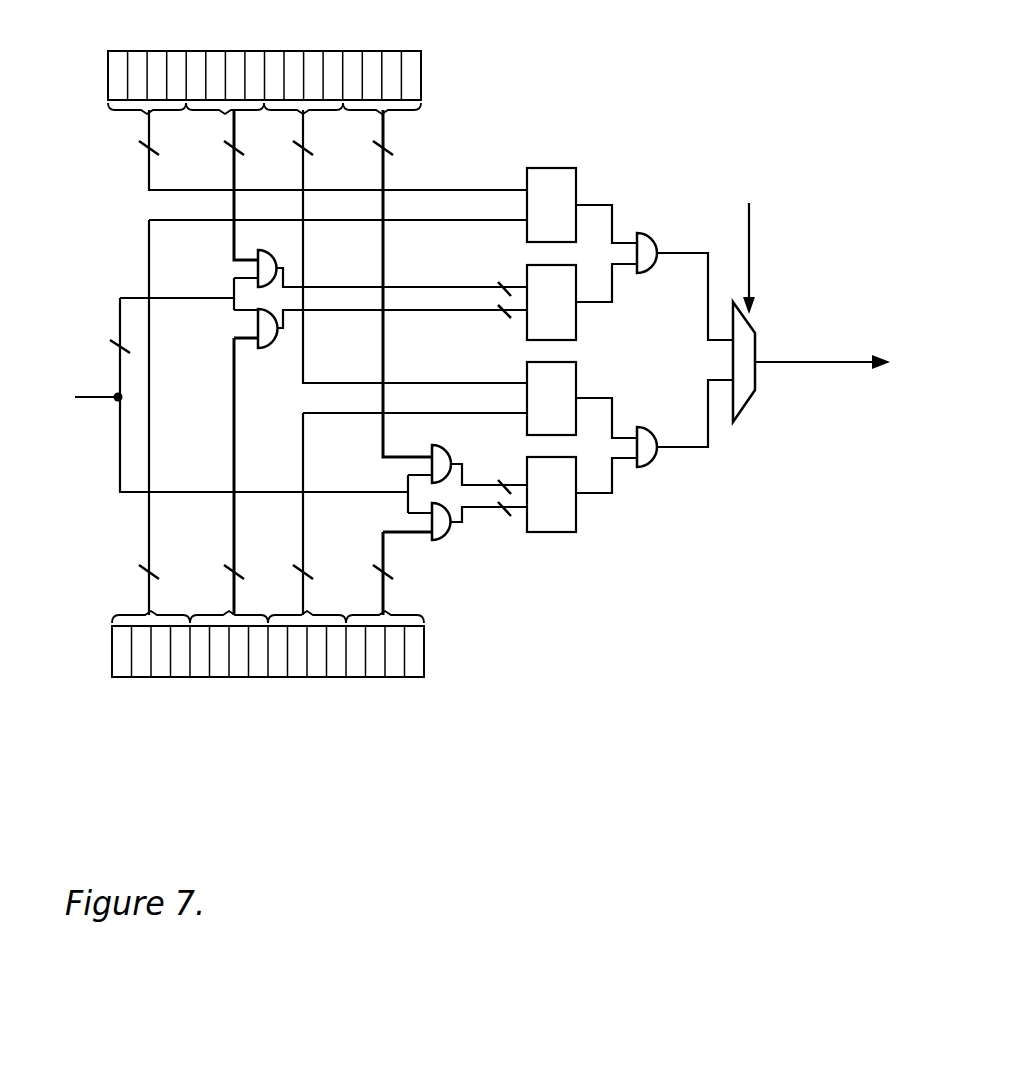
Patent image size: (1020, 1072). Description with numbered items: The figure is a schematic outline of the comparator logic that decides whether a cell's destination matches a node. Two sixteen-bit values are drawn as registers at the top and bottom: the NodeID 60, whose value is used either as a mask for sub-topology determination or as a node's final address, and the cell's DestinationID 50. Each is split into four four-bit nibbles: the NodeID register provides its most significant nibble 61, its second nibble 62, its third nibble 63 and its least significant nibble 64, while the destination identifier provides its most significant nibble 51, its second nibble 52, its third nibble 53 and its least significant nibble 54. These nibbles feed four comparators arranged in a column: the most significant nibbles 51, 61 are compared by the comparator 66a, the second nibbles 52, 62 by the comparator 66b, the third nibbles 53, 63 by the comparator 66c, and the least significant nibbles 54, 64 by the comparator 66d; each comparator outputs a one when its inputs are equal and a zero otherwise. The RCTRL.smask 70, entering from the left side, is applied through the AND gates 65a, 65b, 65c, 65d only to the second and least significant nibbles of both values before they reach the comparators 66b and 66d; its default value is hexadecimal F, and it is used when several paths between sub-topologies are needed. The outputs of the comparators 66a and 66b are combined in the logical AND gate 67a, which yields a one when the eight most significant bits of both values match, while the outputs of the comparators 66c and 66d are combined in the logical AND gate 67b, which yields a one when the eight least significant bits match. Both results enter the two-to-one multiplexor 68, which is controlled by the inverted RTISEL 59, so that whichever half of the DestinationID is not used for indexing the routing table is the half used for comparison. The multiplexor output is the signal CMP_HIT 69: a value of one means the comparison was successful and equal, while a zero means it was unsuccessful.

The DestinationID 50 is at (268, 676).
The DestinationID[15:12] 51 is at (319, 421).
The DestinationID[11:8] 52 is at (229, 480).
The DestinationID[7:4] 53 is at (397, 518).
The DestinationID[3:0] 54 is at (389, 571).
The RTISEL 59 is at (757, 238).
The NodeID 60 is at (264, 52).
The NodeID[15:12] 61 is at (317, 146).
The NodeID[11:8] 62 is at (229, 181).
The NodeID[7:4] 63 is at (395, 243).
The NodeID[3:0] 64 is at (387, 280).
The AND gate 65a is at (273, 262).
The AND gate 65b is at (268, 344).
The AND gate 65c is at (433, 468).
The AND gate 65d is at (437, 538).
The comparator 66a is at (557, 167).
The comparator 66b is at (573, 312).
The comparator 66c is at (538, 371).
The comparator 66d is at (578, 530).
The logical AND gate 67a is at (651, 252).
The logical AND gate 67b is at (648, 462).
The 2:1 multiplexor 68 is at (743, 389).
The CMP_HIT 69 is at (822, 328).
The RCTRL.smask 70 is at (239, 401).